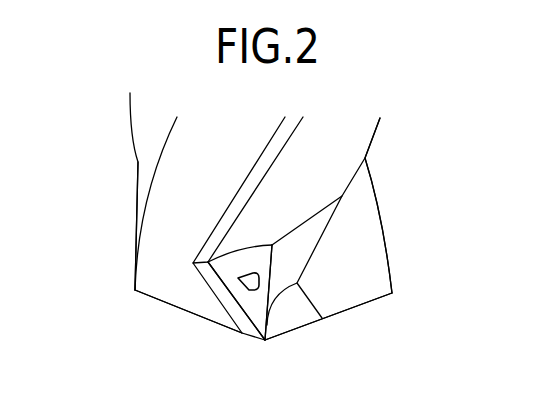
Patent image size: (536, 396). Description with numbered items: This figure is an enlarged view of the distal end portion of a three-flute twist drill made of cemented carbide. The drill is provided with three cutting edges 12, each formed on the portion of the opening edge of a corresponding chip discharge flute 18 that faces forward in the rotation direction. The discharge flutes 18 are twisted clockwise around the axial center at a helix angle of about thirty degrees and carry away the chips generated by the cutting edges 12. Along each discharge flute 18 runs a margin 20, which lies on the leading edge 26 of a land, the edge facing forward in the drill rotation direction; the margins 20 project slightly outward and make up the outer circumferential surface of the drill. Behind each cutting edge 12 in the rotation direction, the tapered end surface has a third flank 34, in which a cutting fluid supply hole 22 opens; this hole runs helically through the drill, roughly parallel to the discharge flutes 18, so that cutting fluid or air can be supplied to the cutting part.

The cutting edge 12 is at (372, 302).
The discharge flute 18 is at (158, 265).
The margin 20 is at (235, 198).
The cutting fluid supply hole 22 is at (250, 282).
The leading edge 26 is at (372, 172).
The third flank 34 is at (245, 258).